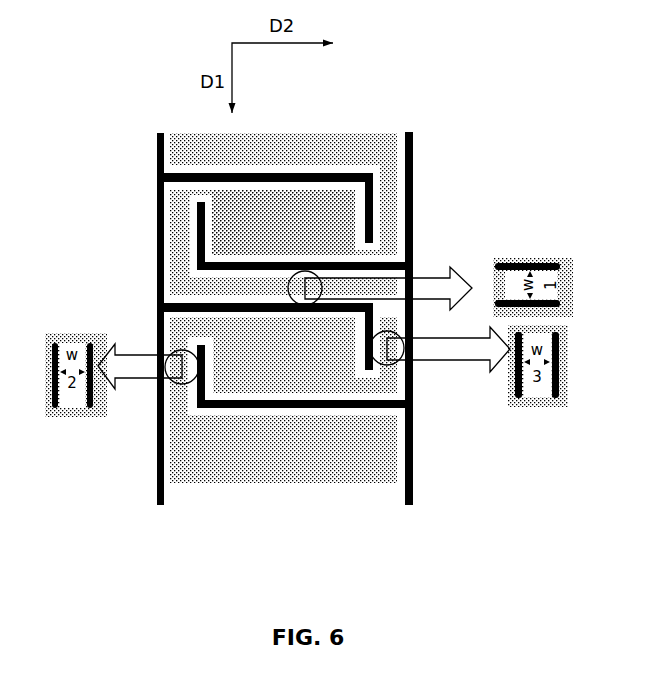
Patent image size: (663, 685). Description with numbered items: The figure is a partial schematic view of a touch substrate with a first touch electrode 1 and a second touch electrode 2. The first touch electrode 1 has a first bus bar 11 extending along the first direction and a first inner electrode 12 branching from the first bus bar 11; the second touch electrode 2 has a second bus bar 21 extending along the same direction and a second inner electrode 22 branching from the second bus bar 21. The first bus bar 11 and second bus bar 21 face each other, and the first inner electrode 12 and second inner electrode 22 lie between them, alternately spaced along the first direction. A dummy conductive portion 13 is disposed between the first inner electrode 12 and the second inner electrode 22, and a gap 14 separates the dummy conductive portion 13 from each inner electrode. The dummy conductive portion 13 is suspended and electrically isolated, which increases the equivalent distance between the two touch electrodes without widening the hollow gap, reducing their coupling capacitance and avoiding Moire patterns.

The first touch electrode 1 is at (277, 340).
The second touch electrode 2 is at (323, 356).
The first bus bar 11 is at (157, 163).
The first inner electrode 12 is at (334, 157).
The dummy conductive portion 13 is at (335, 246).
The gap 14 is at (375, 211).
The second bus bar 21 is at (413, 160).
The second inner electrode 22 is at (381, 409).